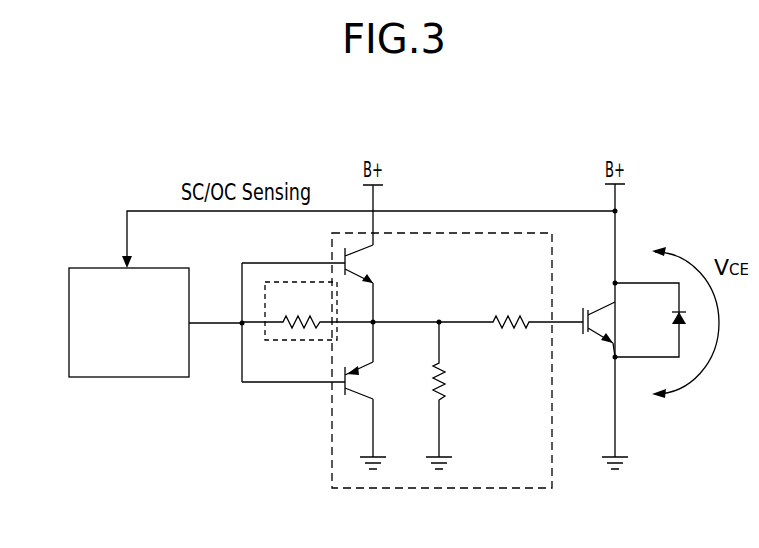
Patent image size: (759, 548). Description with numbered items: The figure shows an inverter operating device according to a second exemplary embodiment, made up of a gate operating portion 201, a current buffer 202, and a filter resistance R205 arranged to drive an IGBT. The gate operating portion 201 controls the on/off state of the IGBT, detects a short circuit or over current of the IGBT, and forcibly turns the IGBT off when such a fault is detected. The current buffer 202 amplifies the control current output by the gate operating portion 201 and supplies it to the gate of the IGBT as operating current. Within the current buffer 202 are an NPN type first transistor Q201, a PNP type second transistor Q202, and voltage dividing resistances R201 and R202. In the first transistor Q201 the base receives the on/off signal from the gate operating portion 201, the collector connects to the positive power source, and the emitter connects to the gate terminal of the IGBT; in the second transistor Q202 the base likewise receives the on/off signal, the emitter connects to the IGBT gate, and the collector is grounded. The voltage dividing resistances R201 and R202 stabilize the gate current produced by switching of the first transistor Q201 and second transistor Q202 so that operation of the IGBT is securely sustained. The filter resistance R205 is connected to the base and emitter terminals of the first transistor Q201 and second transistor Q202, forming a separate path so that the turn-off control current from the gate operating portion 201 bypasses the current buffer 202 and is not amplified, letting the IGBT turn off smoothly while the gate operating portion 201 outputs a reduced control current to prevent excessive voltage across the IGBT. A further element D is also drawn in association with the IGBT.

The gate operating portion 201 is at (69, 323).
The current buffer 202 is at (396, 385).
The first transistor Q201 is at (379, 283).
The second transistor Q202 is at (379, 389).
The voltage dividing resistance R201 is at (464, 389).
The voltage dividing resistance R202 is at (511, 308).
The filter resistance R205 is at (340, 311).
The element IGBT is at (610, 320).
The freewheeling diode D is at (660, 320).